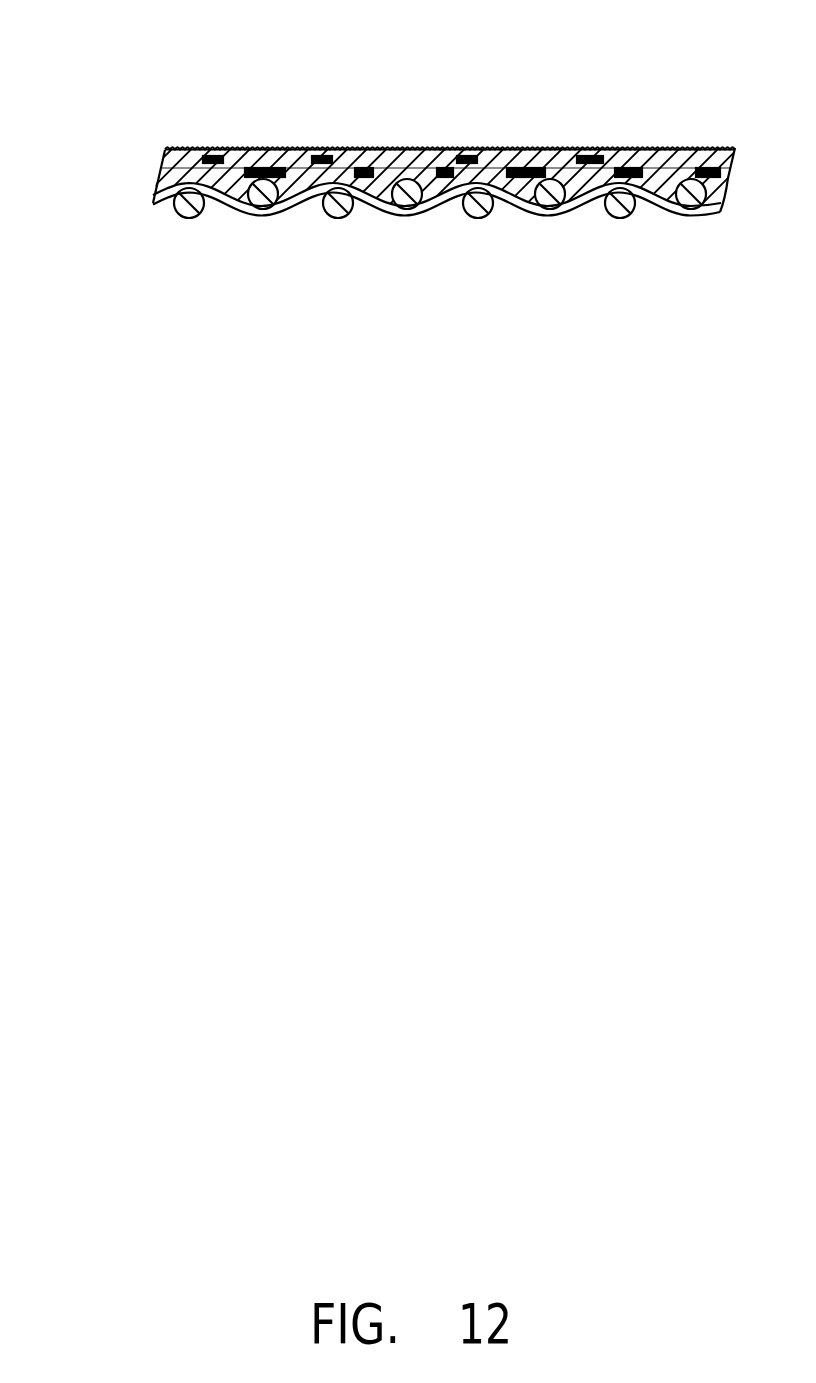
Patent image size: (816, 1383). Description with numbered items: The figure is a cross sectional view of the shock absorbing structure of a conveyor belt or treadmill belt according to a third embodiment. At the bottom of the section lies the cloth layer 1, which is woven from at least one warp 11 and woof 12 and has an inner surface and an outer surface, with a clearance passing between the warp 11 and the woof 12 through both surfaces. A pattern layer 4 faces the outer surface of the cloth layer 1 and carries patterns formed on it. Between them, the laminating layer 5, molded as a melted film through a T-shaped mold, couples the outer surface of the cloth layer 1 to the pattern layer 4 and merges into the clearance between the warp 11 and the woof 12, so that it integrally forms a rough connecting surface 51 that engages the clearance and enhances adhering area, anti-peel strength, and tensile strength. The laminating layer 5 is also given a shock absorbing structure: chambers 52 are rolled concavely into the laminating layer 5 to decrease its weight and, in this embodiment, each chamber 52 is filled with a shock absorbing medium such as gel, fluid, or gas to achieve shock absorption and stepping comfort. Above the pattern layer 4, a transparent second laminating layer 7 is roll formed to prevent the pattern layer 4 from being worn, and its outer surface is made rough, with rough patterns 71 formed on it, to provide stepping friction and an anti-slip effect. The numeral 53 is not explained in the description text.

The cloth layer 1 is at (402, 175).
The pattern layer 4 is at (237, 157).
The laminating layer 5 is at (469, 112).
The second laminating layer 7 is at (430, 79).
The warp 11 is at (332, 203).
The woof 12 is at (430, 208).
The connecting surface 51 is at (383, 197).
The air chamber 52 is at (617, 172).
The third fabric portion 53 is at (705, 168).
The rough patterns 71 is at (500, 147).